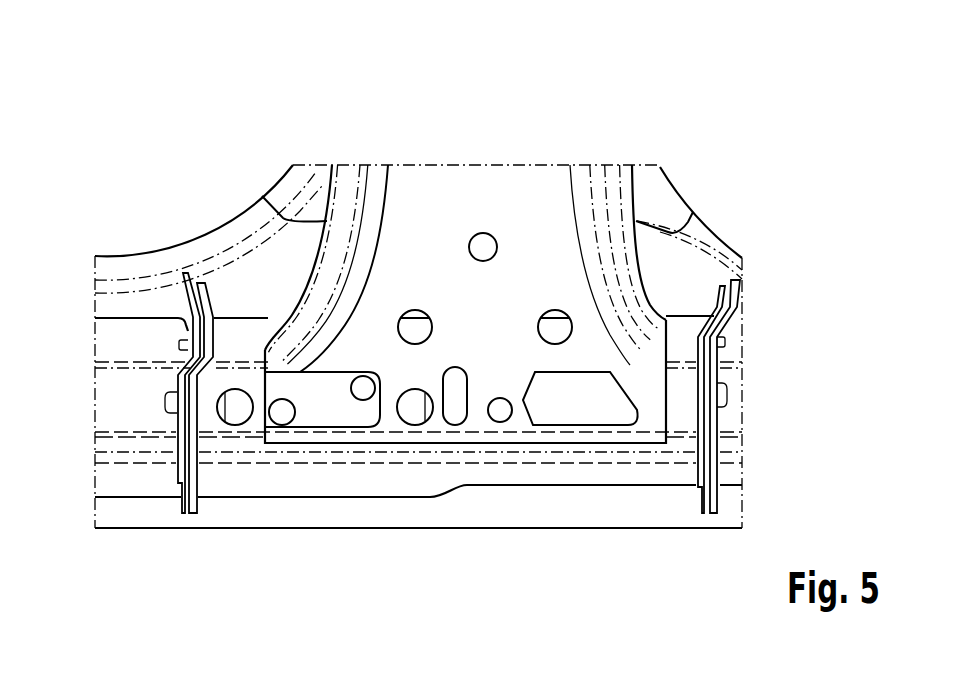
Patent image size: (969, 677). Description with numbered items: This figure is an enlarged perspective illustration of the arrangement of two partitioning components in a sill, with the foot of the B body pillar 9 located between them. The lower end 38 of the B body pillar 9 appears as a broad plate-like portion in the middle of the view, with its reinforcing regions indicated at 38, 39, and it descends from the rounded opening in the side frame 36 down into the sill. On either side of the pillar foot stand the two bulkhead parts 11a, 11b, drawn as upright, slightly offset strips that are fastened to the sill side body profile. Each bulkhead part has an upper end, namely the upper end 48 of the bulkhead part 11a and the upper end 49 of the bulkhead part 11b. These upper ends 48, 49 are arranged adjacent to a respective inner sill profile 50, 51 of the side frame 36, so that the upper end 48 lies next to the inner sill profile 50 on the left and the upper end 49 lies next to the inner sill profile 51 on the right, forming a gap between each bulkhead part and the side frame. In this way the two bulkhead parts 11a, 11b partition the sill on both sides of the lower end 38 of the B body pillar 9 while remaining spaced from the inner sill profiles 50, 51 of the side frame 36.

The B body pillar 9 is at (441, 336).
The bulkhead part 11a is at (127, 329).
The bulkhead part 11b is at (756, 329).
The side frame 36 is at (473, 229).
The lower end of the B body pillar 38 is at (417, 373).
The reinforcement column 39 is at (578, 172).
The upper end of the bulkhead part 48 is at (190, 275).
The upper end of the bulkhead part 49 is at (725, 280).
The inner sill profile 50 is at (125, 262).
The inner sill profile 51 is at (735, 258).